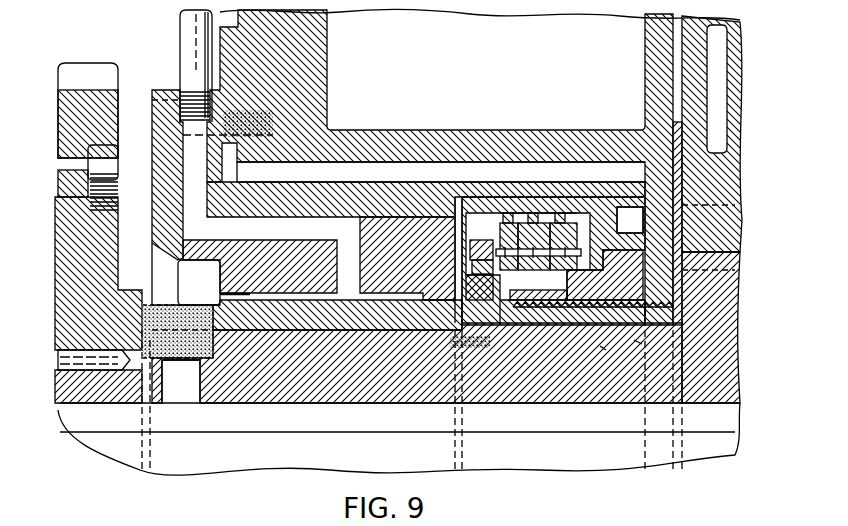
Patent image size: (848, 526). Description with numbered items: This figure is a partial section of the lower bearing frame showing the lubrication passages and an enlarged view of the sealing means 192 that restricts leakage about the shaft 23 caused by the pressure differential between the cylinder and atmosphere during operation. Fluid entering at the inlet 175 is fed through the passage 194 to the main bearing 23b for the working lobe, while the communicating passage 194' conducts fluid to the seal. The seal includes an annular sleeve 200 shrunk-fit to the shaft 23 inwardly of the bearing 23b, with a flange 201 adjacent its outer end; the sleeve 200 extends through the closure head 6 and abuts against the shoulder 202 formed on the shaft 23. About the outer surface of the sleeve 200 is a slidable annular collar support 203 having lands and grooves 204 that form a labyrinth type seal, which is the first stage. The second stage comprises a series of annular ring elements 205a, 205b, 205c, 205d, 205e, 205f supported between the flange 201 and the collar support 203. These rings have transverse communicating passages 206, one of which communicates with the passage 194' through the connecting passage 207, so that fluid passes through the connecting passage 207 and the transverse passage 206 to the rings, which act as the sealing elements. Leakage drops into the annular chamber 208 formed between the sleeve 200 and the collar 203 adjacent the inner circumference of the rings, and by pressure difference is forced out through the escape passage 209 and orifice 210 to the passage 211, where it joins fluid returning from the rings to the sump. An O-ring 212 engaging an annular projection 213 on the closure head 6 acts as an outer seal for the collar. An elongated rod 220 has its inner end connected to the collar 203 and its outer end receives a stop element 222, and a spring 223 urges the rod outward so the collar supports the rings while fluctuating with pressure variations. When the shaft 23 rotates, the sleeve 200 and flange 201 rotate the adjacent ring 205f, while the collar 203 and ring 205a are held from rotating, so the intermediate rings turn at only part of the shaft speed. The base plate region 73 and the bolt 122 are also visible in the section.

The closure head 6 is at (650, 82).
The shaft 23 is at (327, 390).
The main bearing 23b is at (300, 312).
The base plate 73 is at (475, 443).
The bolt 122 is at (106, 106).
The inlet 175 is at (185, 66).
The sealing means 192 is at (588, 180).
The passage 194 is at (319, 258).
The communicating passage 194' is at (441, 139).
The annular sleeve 200 is at (638, 344).
The flange 201 is at (480, 268).
The shoulder 202 is at (680, 293).
The slidable annular collar support 203 is at (660, 268).
The lands and grooves 204 is at (606, 313).
The annular ring element 205a is at (560, 228).
The annular ring element 205b is at (640, 330).
The annular ring element 205c is at (531, 232).
The annular ring element 205d is at (558, 304).
The annular ring element 205e is at (508, 228).
The annular ring element 205f is at (527, 325).
The transverse communicating passage 206 is at (497, 236).
The connecting passage 207 is at (603, 215).
The annular chamber 208 is at (603, 347).
The escape passage 209 is at (472, 282).
The orifice 210 is at (480, 254).
The passage 211 is at (500, 195).
The O-ring 212 is at (618, 258).
The annular projection 213 is at (630, 220).
The elongated rod 220 is at (266, 344).
The stop element 222 is at (163, 378).
The spring 223 is at (176, 304).